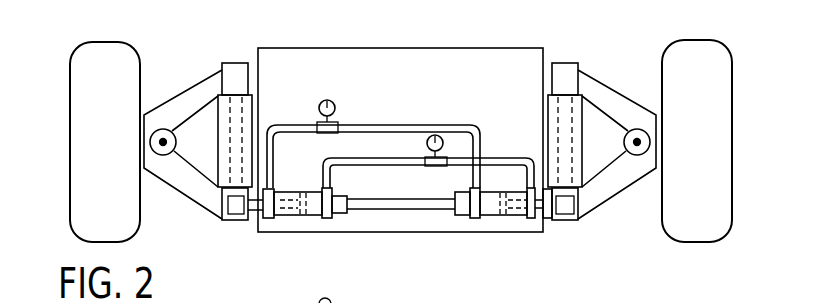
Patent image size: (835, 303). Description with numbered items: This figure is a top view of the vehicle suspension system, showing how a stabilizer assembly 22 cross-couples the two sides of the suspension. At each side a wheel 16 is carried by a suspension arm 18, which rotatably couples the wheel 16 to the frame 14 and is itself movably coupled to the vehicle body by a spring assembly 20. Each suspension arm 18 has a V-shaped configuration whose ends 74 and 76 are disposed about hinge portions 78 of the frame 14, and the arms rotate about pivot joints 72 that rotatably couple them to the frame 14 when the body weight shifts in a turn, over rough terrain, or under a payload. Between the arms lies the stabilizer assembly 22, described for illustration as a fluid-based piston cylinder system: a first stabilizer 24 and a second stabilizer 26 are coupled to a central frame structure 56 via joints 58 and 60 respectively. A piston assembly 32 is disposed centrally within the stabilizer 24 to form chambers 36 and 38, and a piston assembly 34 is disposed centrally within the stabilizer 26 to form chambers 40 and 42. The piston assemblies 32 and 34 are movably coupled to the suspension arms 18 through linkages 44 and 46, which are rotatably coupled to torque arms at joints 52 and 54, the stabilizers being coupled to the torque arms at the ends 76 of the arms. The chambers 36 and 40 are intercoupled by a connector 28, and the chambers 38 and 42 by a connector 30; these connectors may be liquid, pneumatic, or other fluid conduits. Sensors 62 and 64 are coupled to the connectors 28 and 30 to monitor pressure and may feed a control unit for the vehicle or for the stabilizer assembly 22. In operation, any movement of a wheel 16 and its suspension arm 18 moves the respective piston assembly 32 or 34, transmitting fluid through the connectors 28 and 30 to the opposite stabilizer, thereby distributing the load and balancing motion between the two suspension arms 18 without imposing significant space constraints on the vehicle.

The frame 14 is at (443, 210).
The wheels 16 is at (70, 143).
The suspension arms 18 is at (177, 197).
The spring assemblies 20 is at (150, 142).
The stabilizer assembly 22 is at (387, 84).
The stabilizer 24 is at (297, 182).
The stabilizer 26 is at (505, 182).
The connector 28 is at (396, 124).
The connector 30 is at (495, 152).
The piston assembly 32 is at (315, 216).
The piston assembly 34 is at (517, 216).
The chamber 36 is at (273, 216).
The chamber 38 is at (305, 216).
The chamber 40 is at (485, 216).
The chamber 42 is at (520, 218).
The linkage 44 is at (262, 219).
The linkage 46 is at (551, 219).
The joint 52 is at (237, 221).
The joint 54 is at (563, 219).
The central frame structure 56 is at (400, 210).
The joint 58 is at (340, 214).
The joint 60 is at (462, 216).
The sensor 62 is at (326, 100).
The sensor 64 is at (436, 134).
The pivot joints 72 is at (238, 55).
The end 74 is at (222, 63).
The end 76 is at (223, 221).
The hinge portions 78 is at (218, 143).